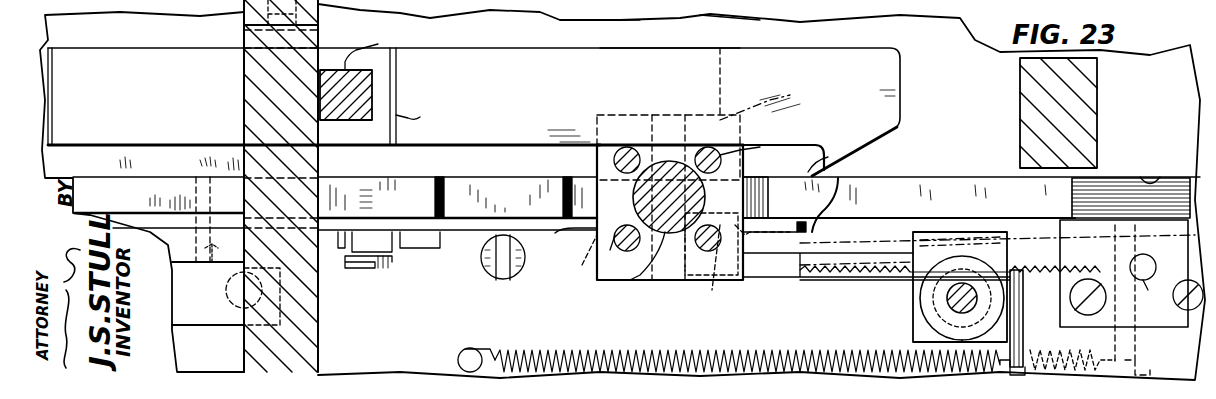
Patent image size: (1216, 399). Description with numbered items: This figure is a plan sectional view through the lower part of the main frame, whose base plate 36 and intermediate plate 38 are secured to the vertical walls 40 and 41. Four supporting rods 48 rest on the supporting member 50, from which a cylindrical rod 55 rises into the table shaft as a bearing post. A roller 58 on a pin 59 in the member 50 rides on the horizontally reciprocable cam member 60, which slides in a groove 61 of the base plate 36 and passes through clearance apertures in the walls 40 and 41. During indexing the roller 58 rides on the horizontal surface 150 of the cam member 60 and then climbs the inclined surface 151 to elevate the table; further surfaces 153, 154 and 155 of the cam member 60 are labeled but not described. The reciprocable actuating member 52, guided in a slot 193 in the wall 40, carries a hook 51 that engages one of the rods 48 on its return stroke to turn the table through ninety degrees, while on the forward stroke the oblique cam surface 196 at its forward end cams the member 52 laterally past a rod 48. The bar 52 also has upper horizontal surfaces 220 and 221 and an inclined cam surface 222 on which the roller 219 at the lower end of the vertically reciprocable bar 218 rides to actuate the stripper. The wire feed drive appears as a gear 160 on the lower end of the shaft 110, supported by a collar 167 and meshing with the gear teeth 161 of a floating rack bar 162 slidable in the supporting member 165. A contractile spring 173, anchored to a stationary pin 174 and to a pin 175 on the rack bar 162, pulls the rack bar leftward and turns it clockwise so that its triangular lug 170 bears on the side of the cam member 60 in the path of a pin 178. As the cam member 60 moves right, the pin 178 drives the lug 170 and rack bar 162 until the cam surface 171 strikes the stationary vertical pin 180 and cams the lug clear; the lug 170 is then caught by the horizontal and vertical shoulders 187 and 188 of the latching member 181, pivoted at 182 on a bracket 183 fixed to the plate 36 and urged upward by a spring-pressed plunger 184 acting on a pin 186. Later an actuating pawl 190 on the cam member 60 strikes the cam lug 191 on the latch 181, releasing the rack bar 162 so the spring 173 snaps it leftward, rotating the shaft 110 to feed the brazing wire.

The base plate 36 is at (616, 14).
The intermediate plate 38 is at (731, 10).
The vertical wall 40 is at (315, 340).
The vertical wall 41 is at (1097, 98).
The supporting rods 48 is at (628, 148).
The supporting member 50 is at (597, 272).
The hook 51 is at (858, 165).
The actuating member 52 is at (693, 41).
The cylindrical rod 55 is at (608, 199).
The roller 58 is at (582, 250).
The pin 59 is at (643, 120).
The actuating cam member 60 is at (198, 172).
The groove 61 is at (1152, 178).
The shaft 110 is at (950, 300).
The horizontal surface 150 is at (917, 185).
The inclined surface 151 is at (790, 180).
The stop 153 is at (574, 190).
The slide plate 154 is at (517, 185).
The stop 155 is at (445, 190).
The gear 160 is at (920, 292).
The gear teeth 161 is at (882, 278).
The floating rack bar 162 is at (780, 278).
The supporting member 165 is at (948, 232).
The collar 167 is at (935, 322).
The triangular shaped lug 170 is at (812, 232).
The cam surface 171 is at (1073, 278).
The contractile spring 173 is at (595, 350).
The stationary pin 174 is at (462, 345).
The pin 175 is at (1024, 315).
The pin 178 is at (567, 238).
The stationary vertical pin 180 is at (1144, 291).
The latching member 181 is at (470, 228).
The pivot 182 is at (226, 284).
The bracket 183 is at (210, 318).
The spring-pressed plunger 184 is at (320, 36).
The pin 186 is at (482, 272).
The horizontal shoulder 187 is at (830, 218).
The vertical shoulder 188 is at (834, 169).
The actuating pawl 190 is at (355, 262).
The cam lug 191 is at (395, 235).
The slot 193 is at (244, 36).
The oblique cam surface 196 is at (738, 128).
The bar 218 is at (382, 47).
The roller 219 is at (372, 98).
The upper horizontal surface 220 is at (150, 140).
The upper horizontal surface 221 is at (500, 58).
The inclined cam surface 222 is at (424, 118).